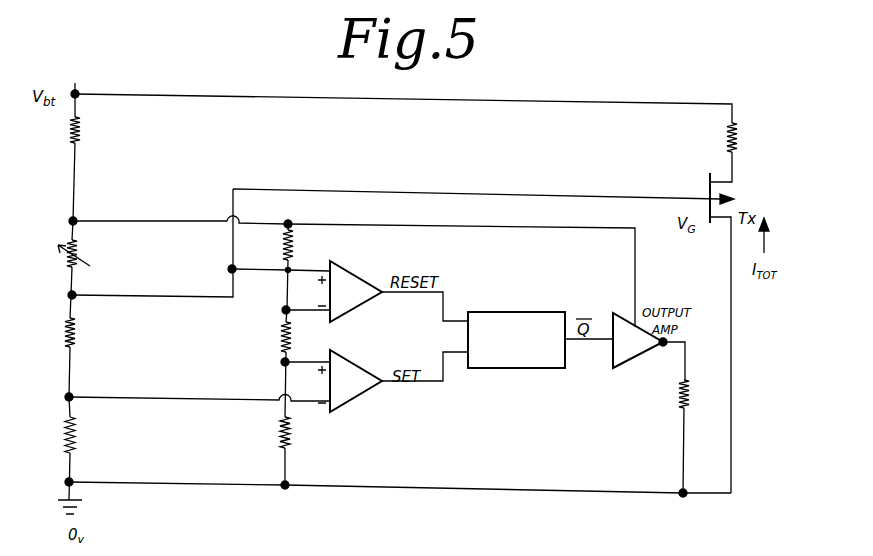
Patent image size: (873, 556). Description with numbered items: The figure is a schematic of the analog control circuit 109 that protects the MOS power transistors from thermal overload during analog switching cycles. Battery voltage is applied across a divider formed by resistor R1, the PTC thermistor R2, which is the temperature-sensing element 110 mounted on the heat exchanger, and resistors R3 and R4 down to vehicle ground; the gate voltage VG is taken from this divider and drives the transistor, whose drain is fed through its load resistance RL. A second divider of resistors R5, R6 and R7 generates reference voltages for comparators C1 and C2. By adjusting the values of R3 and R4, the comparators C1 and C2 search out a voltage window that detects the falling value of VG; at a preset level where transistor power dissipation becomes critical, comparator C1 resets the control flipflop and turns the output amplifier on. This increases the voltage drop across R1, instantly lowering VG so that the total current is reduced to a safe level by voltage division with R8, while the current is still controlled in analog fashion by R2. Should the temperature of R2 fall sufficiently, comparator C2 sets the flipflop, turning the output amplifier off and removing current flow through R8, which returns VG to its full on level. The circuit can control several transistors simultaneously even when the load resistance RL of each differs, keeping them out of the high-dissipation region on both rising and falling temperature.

The control circuit 109 is at (520, 312).
The temperature-sensing element 110 is at (93, 259).
The resistor R1 is at (57, 132).
The PTC thermistor R2 is at (60, 260).
The resistor R3 is at (50, 335).
The resistor R4 is at (51, 437).
The resistor R5 is at (299, 247).
The resistor R6 is at (297, 338).
The resistor R7 is at (296, 435).
The resistor R8 is at (695, 397).
The load resistance RL is at (743, 138).
The comparator C1 is at (350, 291).
The comparator C2 is at (350, 381).